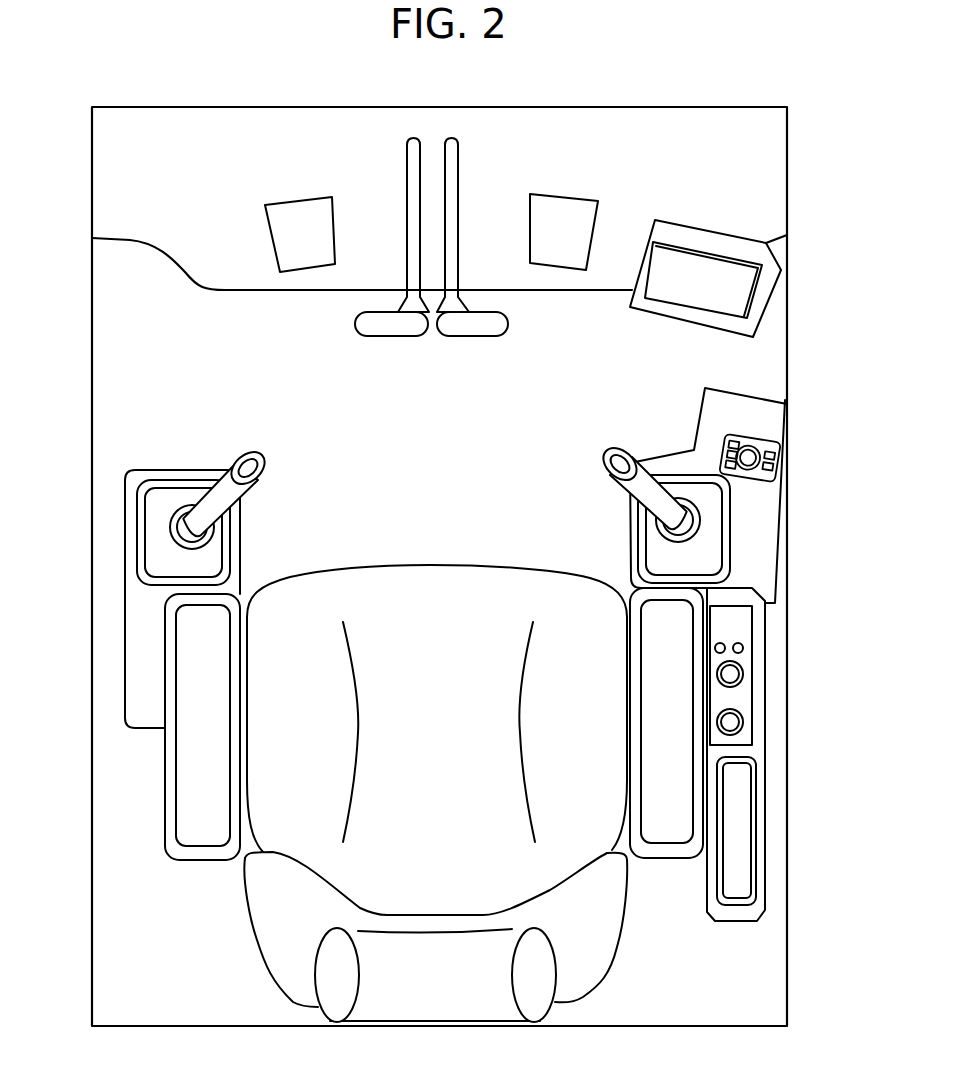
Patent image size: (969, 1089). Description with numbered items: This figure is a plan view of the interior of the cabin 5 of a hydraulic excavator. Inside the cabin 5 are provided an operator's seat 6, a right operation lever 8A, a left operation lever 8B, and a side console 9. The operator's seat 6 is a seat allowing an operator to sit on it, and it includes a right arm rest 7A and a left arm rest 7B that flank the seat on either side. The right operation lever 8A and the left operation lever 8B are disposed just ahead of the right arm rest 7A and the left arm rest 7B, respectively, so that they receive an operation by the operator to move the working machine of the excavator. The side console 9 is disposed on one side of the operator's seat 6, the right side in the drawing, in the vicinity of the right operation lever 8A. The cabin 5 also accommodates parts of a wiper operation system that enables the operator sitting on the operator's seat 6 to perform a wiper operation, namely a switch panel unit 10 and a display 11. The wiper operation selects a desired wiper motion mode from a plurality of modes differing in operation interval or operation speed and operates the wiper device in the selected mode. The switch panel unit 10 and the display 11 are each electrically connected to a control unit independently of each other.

The cabin 5 is at (152, 361).
The operator's seat 6 is at (422, 565).
The right arm rest 7A is at (672, 858).
The left arm rest 7B is at (194, 862).
The right operation lever 8A is at (600, 470).
The left operation lever 8B is at (262, 476).
The side console 9 is at (753, 572).
The switch panel unit 10 is at (763, 437).
The display 11 is at (742, 280).